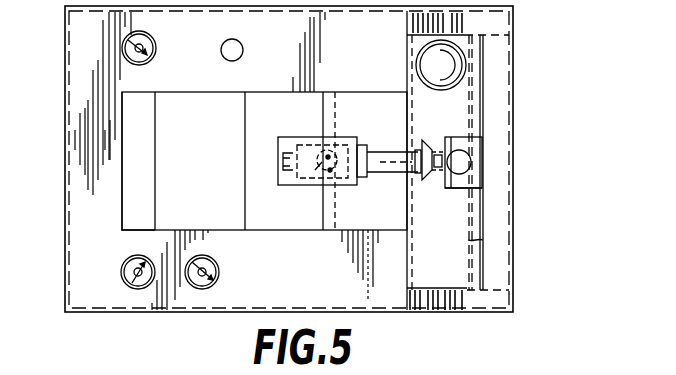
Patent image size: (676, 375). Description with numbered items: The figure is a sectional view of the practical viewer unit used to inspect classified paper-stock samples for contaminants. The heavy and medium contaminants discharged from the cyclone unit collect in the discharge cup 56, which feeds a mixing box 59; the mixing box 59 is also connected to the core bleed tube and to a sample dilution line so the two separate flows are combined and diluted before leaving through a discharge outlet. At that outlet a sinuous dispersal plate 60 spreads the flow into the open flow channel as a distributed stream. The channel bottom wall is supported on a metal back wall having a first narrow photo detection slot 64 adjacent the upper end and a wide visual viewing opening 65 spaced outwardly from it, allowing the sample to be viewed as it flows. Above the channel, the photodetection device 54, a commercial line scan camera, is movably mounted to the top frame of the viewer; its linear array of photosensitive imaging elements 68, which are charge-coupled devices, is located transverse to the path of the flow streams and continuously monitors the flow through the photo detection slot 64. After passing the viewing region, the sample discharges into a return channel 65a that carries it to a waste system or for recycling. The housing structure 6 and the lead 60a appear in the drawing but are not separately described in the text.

The housing wall 6 is at (468, 68).
The photodetection device 54 is at (277, 186).
The discharge cup 56 is at (416, 66).
The mixing box 59 is at (427, 212).
The sinuous dispersal plate 60 is at (447, 121).
The motor cable 60a is at (472, 235).
The photo detection slot 64 is at (335, 112).
The visual viewing opening 65 is at (225, 130).
The return channel 65a is at (121, 204).
The photosensitive imaging elements 68 is at (330, 172).